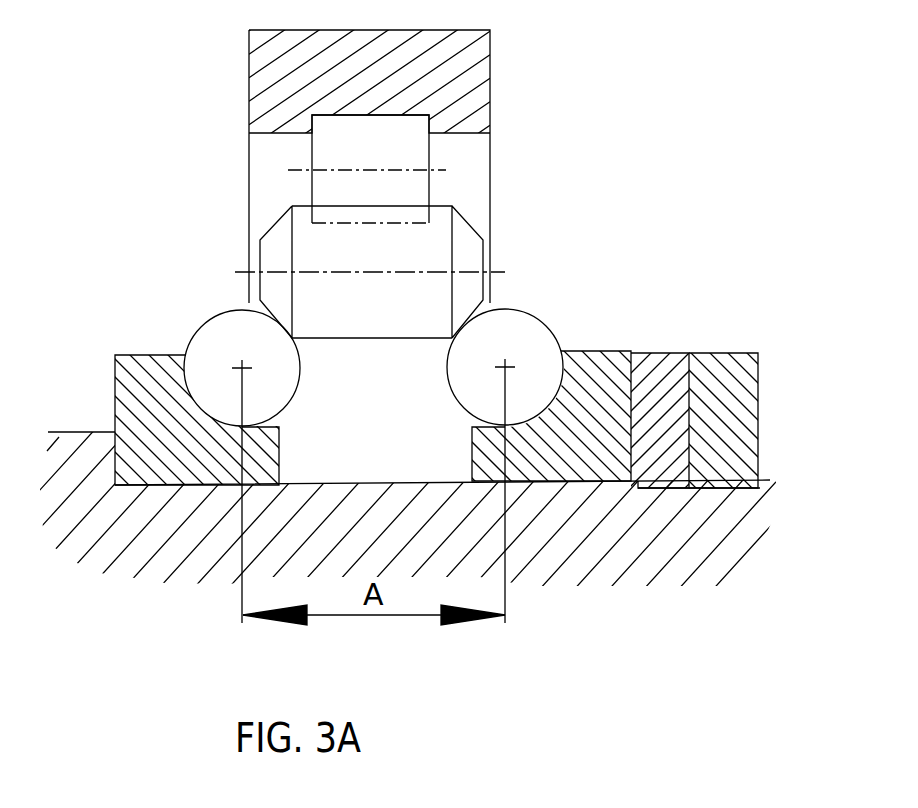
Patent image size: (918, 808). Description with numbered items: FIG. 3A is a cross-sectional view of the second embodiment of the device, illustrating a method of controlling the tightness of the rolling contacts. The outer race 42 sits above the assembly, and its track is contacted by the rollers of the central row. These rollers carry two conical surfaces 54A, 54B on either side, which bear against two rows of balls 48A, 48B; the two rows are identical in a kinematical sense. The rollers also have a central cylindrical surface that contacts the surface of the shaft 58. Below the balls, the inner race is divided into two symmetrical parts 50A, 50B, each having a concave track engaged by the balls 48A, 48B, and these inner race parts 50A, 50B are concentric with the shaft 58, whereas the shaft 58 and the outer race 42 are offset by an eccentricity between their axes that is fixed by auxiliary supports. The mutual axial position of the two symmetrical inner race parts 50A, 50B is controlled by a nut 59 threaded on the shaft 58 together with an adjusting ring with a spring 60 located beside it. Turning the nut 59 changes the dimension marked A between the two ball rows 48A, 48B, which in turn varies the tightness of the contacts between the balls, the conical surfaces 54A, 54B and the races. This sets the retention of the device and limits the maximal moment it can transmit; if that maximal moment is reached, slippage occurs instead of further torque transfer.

The outer race 42 is at (297, 96).
The shaft 58 is at (400, 150).
The conical surface 54A is at (281, 250).
The conical surface 54B is at (462, 239).
The row of balls 48A is at (232, 338).
The row of balls 48B is at (510, 327).
The inner race part 50A is at (150, 382).
The inner race part 50B is at (606, 378).
The adjusting ring with spring 60 is at (661, 437).
The nut 59 is at (718, 375).